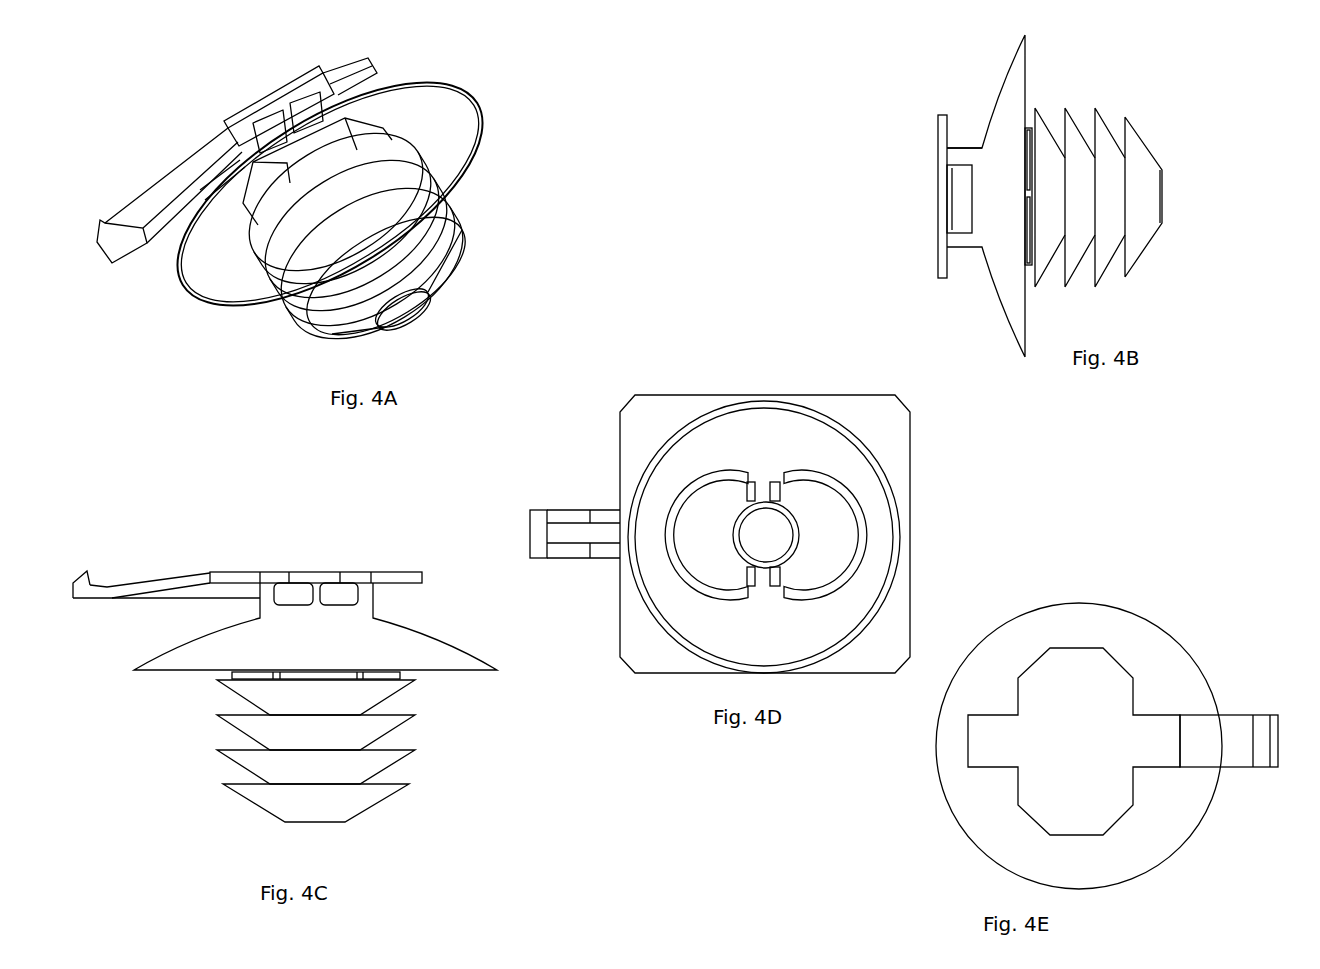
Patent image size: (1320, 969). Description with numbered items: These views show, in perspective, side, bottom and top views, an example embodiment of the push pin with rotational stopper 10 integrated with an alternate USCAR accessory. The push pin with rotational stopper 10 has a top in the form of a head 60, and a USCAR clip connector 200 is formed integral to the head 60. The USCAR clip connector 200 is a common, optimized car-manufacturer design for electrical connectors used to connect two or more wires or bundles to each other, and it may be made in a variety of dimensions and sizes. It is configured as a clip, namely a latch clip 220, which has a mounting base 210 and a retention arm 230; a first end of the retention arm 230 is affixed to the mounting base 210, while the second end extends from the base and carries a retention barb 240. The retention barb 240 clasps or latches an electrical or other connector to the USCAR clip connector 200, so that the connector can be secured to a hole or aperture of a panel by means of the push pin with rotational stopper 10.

In FIG. 4A, the push pin with rotational stopper 10 is at (474, 197).
In FIG. 4B, the push pin with rotational stopper 10 is at (1150, 125).
In FIG. 4C, the push pin with rotational stopper 10 is at (435, 711).
In FIG. 4D, the push pin with rotational stopper 10 is at (725, 513).
In FIG. 4B, the head 60 is at (963, 148).
In FIG. 4A, the USCAR clip connector 200 is at (185, 158).
In FIG. 4B, the USCAR clip connector 200 is at (925, 80).
In FIG. 4C, the USCAR clip connector 200 is at (391, 537).
In FIG. 4D, the USCAR clip connector 200 is at (853, 378).
In FIG. 4E, the USCAR clip connector 200 is at (1225, 638).
In FIG. 4A, the mounting base 210 is at (250, 115).
In FIG. 4B, the mounting base 210 is at (940, 135).
In FIG. 4C, the mounting base 210 is at (314, 572).
In FIG. 4D, the mounting base 210 is at (652, 650).
In FIG. 4E, the mounting base 210 is at (1117, 683).
In FIG. 4A, the latch clip 220 is at (125, 180).
In FIG. 4C, the latch clip 220 is at (107, 584).
In FIG. 4E, the latch clip 220 is at (1257, 770).
In FIG. 4A, the retention arm 230 is at (202, 193).
In FIG. 4C, the retention arm 230 is at (200, 572).
In FIG. 4D, the retention arm 230 is at (565, 520).
In FIG. 4A, the retention barb 240 is at (100, 224).
In FIG. 4C, the retention barb 240 is at (84, 594).
In FIG. 4D, the retention barb 240 is at (538, 552).